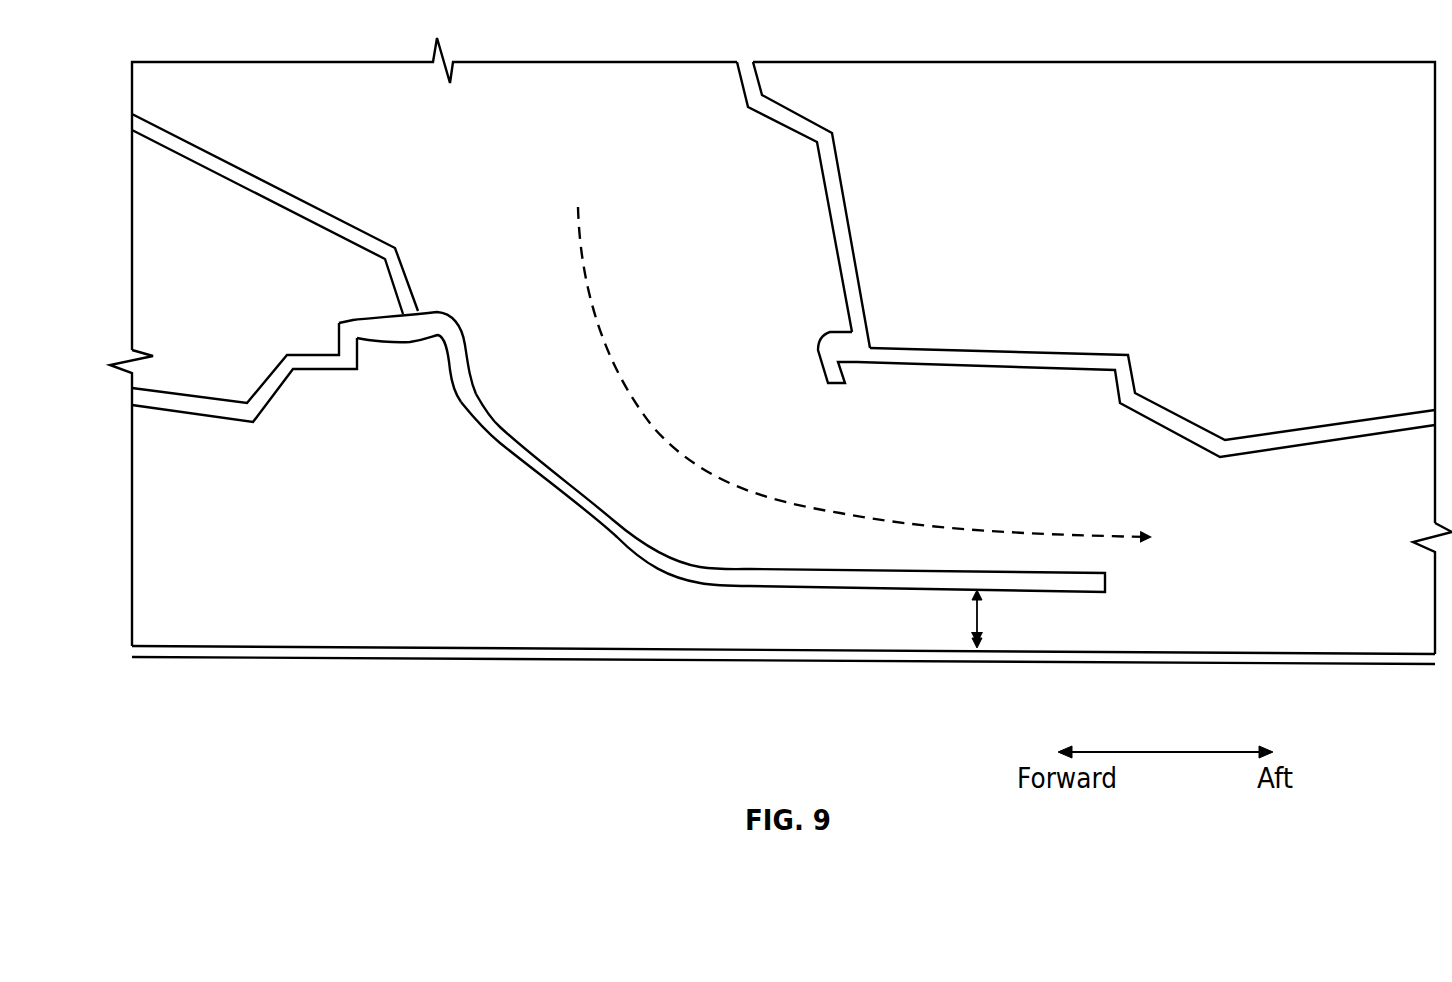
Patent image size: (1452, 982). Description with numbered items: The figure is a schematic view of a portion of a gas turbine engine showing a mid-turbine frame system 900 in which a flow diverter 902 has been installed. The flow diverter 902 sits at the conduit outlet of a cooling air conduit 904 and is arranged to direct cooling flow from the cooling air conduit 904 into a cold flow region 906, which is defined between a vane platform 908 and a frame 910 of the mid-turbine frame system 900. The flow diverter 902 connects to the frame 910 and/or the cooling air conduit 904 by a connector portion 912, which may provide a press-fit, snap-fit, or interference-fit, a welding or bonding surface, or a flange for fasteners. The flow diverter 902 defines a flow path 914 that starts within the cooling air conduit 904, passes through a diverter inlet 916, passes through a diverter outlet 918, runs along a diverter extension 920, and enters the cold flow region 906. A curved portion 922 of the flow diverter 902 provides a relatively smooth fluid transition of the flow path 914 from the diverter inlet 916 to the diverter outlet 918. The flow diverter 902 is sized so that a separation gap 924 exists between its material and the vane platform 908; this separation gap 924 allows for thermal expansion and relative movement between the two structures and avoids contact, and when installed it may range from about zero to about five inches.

The mid-turbine frame system 900 is at (1212, 193).
The flow diverter 902 is at (500, 427).
The cooling air conduit 904 is at (282, 205).
The cold flow region 906 is at (397, 517).
The vane platform 908 is at (1252, 657).
The frame 910 is at (230, 400).
The connector portion 912 is at (455, 317).
The flow path 914 is at (1048, 533).
The diverter inlet 916 is at (617, 308).
The diverter outlet 918 is at (859, 499).
The diverter extension 920 is at (1027, 580).
The curved portion 922 is at (587, 535).
The separation gap 924 is at (975, 627).